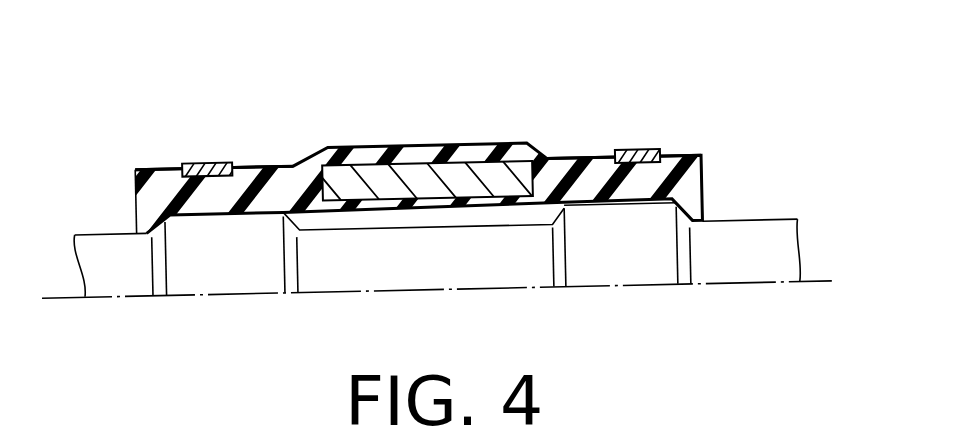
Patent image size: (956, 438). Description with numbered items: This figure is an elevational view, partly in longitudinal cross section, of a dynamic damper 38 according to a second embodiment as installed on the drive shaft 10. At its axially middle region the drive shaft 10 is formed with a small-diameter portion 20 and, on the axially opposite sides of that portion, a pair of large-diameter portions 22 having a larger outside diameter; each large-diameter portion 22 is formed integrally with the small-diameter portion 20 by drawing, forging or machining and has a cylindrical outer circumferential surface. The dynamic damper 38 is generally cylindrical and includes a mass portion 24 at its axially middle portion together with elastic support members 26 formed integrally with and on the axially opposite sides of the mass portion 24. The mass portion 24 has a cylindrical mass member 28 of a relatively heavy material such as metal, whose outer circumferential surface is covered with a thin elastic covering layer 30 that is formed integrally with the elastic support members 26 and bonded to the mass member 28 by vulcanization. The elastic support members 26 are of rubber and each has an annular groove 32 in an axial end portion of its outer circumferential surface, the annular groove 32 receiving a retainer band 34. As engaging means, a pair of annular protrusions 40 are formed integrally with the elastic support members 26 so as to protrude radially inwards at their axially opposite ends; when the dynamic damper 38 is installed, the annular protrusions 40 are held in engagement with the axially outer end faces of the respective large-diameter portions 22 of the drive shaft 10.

The drive shaft 10 is at (785, 206).
The small-diameter portion 20 is at (422, 283).
The large-diameter portions 22 is at (210, 280).
The mass portion 24 is at (419, 123).
The elastic support members 26 is at (251, 140).
The mass member 28 is at (366, 173).
The elastic covering layer 30 is at (481, 169).
The annular groove 32 is at (196, 166).
The retainer band 34 is at (215, 166).
The dynamic damper 38 is at (407, 127).
The annular protrusions 40 is at (149, 221).